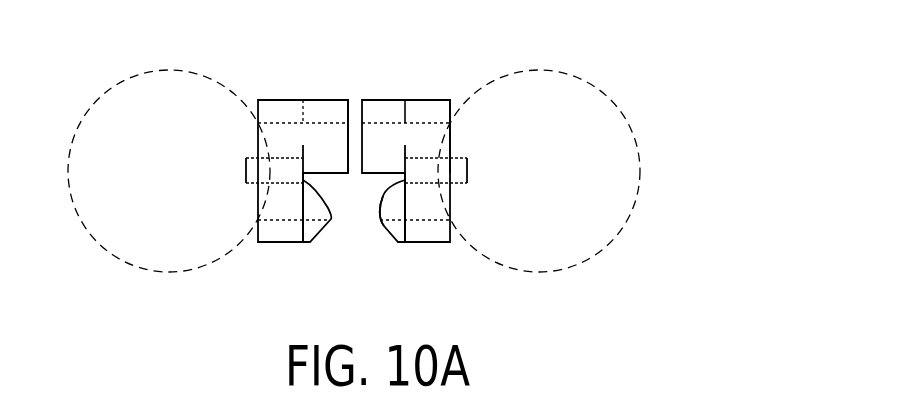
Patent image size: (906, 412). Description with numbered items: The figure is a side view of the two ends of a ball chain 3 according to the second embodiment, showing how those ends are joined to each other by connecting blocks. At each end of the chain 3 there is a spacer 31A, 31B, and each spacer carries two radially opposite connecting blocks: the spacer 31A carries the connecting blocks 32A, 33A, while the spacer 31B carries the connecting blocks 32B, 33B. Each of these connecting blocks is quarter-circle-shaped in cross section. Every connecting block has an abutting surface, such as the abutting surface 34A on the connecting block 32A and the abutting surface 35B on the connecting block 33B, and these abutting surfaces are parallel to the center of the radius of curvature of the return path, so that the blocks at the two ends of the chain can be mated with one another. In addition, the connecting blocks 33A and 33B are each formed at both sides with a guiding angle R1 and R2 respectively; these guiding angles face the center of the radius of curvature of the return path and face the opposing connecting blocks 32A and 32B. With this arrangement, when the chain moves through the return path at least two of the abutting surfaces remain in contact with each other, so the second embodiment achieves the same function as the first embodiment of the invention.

The chain 3 is at (246, 80).
The spacer 31A is at (265, 242).
The spacer 31B is at (450, 102).
The connecting block 32A is at (332, 100).
The connecting block 32B is at (377, 100).
The connecting block 33A is at (313, 209).
The connecting block 33B is at (412, 208).
The abutting surface 34A is at (323, 113).
The abutting surface 35B is at (395, 232).
The guiding angle R1 is at (318, 231).
The guiding angle R2 is at (388, 188).